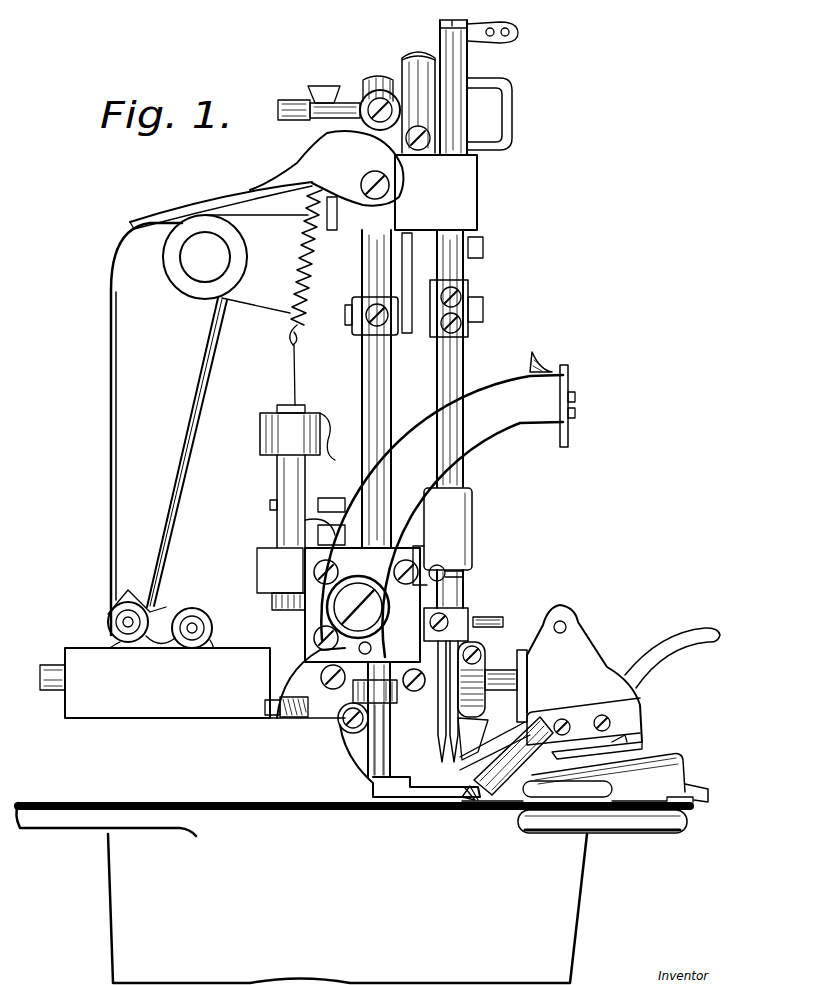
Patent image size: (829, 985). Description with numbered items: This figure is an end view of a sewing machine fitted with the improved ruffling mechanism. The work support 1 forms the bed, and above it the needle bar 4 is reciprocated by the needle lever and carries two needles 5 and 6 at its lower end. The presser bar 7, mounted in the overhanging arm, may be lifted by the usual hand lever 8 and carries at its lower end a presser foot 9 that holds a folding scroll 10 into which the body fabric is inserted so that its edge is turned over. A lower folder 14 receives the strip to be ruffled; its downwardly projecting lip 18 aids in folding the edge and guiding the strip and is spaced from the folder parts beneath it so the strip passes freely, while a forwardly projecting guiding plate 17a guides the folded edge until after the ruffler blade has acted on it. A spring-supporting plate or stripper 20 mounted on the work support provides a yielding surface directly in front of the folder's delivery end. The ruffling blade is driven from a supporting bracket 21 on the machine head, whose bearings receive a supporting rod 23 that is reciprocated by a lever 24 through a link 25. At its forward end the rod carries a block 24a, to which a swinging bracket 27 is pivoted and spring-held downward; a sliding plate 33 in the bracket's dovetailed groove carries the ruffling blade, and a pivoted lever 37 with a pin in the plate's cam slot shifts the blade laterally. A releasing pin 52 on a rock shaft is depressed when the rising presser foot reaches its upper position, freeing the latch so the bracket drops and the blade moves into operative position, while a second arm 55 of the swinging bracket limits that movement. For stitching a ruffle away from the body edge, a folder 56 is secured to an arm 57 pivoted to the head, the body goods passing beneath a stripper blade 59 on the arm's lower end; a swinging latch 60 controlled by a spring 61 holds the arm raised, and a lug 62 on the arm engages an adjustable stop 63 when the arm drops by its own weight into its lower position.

The work support 1 is at (353, 893).
The needle bar 4 is at (450, 376).
The needle 5 is at (437, 730).
The needle 6 is at (512, 738).
The presser bar 7 is at (372, 372).
The hand lever 8 is at (292, 180).
The presser foot 9 is at (366, 752).
The folding scroll 10 is at (488, 795).
The folder 14 is at (648, 778).
The guiding plate 17a is at (537, 790).
The lip 18 is at (708, 788).
The spring-supporting plate or stripper 20 is at (515, 803).
The supporting bracket 21 is at (155, 683).
The supporting rod 23 is at (500, 675).
The lever 24 is at (209, 425).
The block 24a is at (523, 650).
The link 25 is at (162, 625).
The swinging bracket 27 is at (577, 652).
The sliding plate 33 is at (616, 740).
The lever 37 is at (682, 648).
The releasing pin 52 is at (492, 617).
The second arm 55 is at (522, 730).
The folder 56 is at (545, 366).
The arm 57 is at (442, 516).
The stripper blade 59 is at (568, 446).
The swinging latch 60 is at (430, 556).
The spring 61 is at (305, 526).
The lug 62 is at (305, 660).
The adjustable stop 63 is at (272, 585).